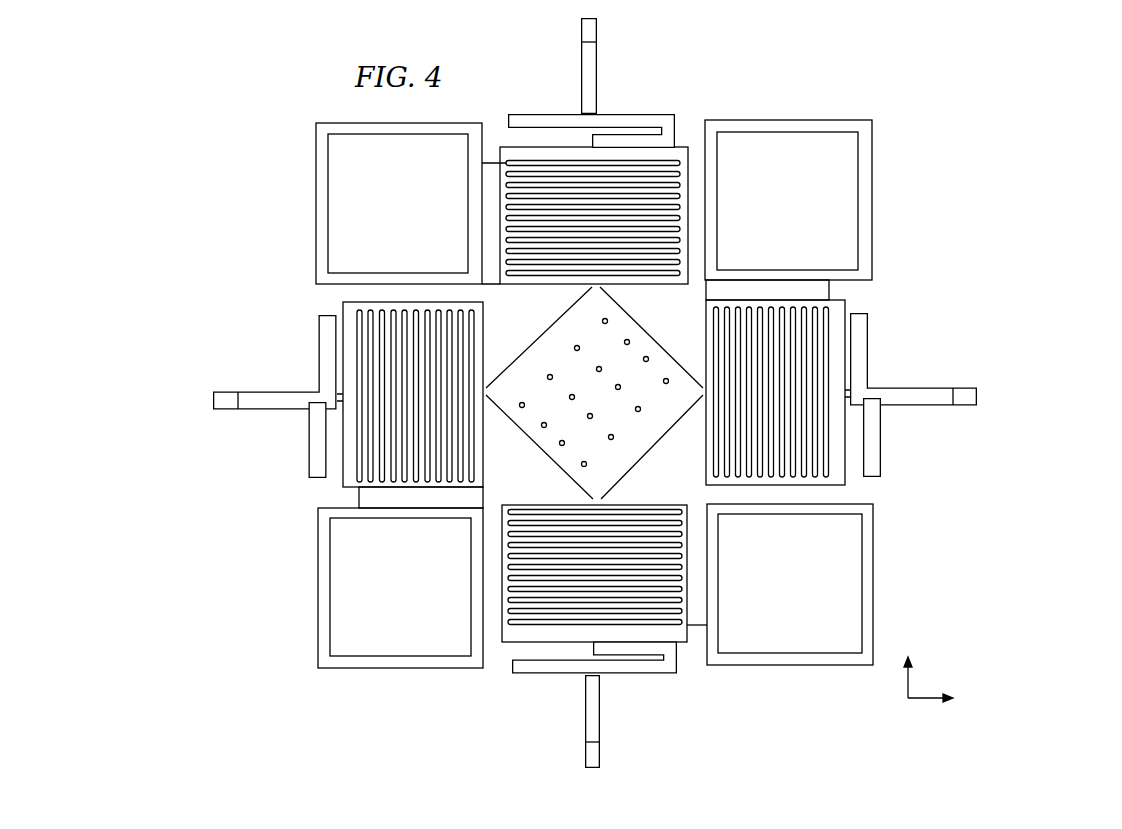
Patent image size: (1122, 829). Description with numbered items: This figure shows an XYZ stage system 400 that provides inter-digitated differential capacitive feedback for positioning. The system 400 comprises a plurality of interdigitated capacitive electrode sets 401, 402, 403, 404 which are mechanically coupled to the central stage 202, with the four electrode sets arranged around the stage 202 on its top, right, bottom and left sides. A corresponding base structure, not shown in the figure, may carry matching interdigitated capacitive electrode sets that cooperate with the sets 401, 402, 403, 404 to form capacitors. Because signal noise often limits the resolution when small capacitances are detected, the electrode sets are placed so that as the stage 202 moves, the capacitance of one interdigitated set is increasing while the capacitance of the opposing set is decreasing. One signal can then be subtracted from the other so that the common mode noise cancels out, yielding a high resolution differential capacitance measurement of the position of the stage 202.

The XYZ stage system 400 is at (843, 97).
The interdigitated capacitive electrode set 401 is at (683, 146).
The interdigitated capacitive electrode set 402 is at (848, 303).
The interdigitated capacitive electrode set 403 is at (504, 645).
The interdigitated capacitive electrode set 404 is at (343, 308).
The stage 202 is at (648, 331).